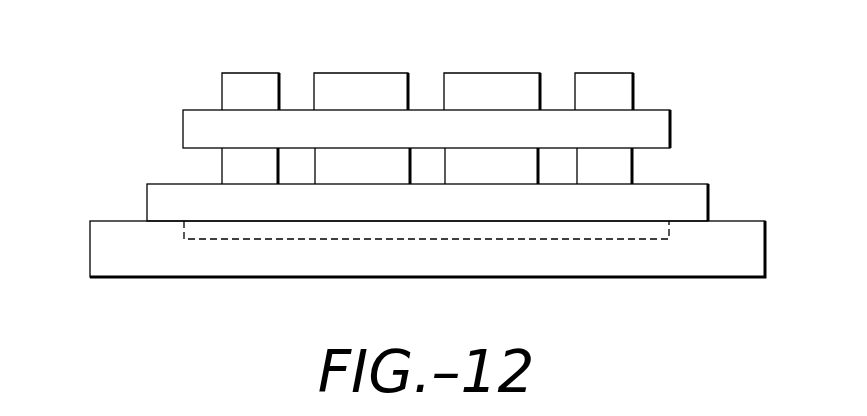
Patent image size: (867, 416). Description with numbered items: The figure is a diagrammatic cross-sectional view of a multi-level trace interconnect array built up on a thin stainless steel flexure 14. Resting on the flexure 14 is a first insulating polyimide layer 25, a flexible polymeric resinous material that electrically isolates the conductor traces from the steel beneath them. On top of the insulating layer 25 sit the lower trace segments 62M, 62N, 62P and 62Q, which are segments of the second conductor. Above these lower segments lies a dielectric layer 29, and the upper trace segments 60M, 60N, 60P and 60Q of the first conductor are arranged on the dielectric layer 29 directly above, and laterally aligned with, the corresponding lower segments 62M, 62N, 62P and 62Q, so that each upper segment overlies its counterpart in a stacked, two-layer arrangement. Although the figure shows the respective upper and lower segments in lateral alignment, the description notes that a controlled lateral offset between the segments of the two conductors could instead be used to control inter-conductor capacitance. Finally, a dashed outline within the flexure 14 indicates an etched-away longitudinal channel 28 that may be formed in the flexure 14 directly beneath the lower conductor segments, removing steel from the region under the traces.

The flexure 14 is at (107, 248).
The first insulating polyimide layer 25 is at (690, 203).
The etched-away longitudinal channel 28 is at (633, 230).
The dielectric layer 29 is at (650, 117).
The trace segment 60M is at (250, 80).
The trace segment 60N is at (358, 80).
The trace segment 60P is at (494, 80).
The trace segment 60Q is at (606, 80).
The trace segment 62M is at (236, 170).
The trace segment 62N is at (360, 172).
The trace segment 62P is at (497, 168).
The trace segment 62Q is at (627, 168).